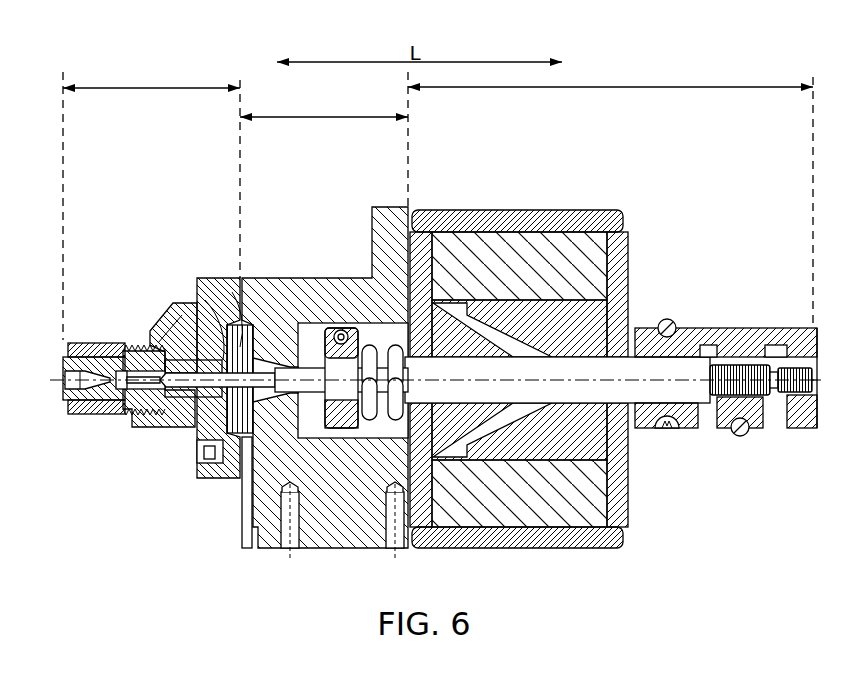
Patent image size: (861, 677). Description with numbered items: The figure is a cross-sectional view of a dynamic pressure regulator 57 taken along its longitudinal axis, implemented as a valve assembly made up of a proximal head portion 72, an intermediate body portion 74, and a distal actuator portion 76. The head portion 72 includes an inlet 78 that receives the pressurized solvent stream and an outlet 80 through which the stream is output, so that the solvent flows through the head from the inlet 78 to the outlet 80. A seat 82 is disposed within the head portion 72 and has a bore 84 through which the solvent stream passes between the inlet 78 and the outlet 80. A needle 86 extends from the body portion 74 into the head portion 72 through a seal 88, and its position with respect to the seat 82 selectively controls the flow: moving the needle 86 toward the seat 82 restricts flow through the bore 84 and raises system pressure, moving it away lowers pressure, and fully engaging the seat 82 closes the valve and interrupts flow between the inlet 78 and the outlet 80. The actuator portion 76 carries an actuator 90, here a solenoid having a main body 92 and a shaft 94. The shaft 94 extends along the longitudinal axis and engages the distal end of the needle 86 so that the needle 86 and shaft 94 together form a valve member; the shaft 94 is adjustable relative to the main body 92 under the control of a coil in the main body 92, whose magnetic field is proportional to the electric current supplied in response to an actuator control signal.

The dynamic pressure regulator 57 is at (690, 53).
The proximal head portion 72 is at (152, 88).
The intermediate body portion 74 is at (342, 117).
The distal actuator portion 76 is at (618, 87).
The inlet 78 is at (167, 332).
The outlet 80 is at (63, 378).
The seat 82 is at (150, 412).
The bore 84 is at (138, 373).
The needle 86 is at (182, 388).
The seal 88 is at (213, 365).
The actuator 90 is at (512, 240).
The main body 92 is at (578, 255).
The shaft 94 is at (300, 385).